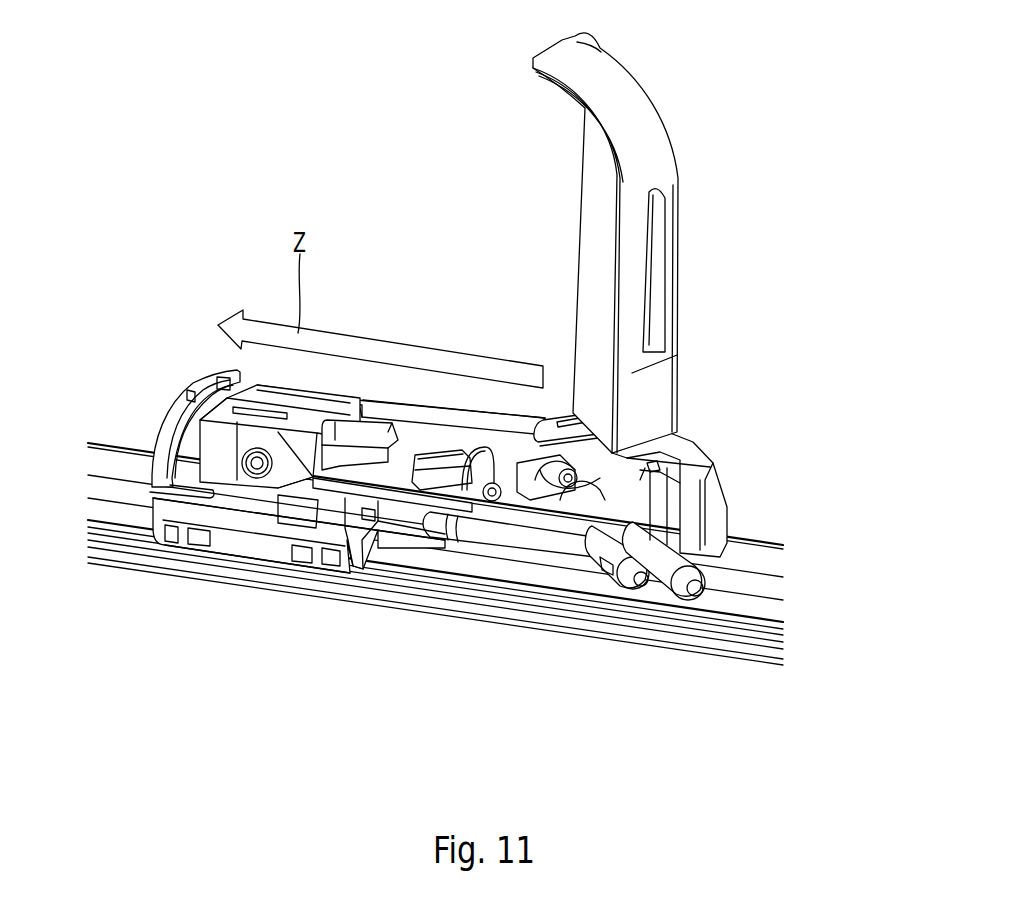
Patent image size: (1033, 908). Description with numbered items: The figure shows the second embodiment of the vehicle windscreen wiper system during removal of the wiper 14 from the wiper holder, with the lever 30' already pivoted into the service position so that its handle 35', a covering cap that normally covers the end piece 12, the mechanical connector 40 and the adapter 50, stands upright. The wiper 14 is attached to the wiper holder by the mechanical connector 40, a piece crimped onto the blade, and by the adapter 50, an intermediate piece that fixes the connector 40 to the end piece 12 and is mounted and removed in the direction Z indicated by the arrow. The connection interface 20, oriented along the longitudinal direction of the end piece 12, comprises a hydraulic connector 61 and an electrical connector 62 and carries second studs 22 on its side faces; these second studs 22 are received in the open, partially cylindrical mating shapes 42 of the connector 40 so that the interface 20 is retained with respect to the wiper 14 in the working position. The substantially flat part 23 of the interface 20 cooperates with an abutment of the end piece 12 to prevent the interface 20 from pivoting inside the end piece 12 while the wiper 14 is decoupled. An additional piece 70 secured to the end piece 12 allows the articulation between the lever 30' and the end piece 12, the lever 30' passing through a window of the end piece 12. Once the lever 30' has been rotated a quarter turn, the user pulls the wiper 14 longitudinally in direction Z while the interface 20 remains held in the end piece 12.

The wiper 14 is at (762, 535).
The hydraulic connector 61 is at (510, 532).
The mechanical connector 40 is at (267, 511).
The adapter 50 is at (167, 410).
The partially cylindrical mating shapes 42 is at (378, 435).
The electrical connector 62 is at (443, 470).
The second studs 22 is at (492, 483).
The connection interface 20 is at (710, 579).
The end piece 12 is at (694, 446).
The substantially flat part 23 is at (665, 471).
The additional piece 70 is at (588, 423).
The lever 30' is at (679, 243).
The handle 35' is at (700, 205).